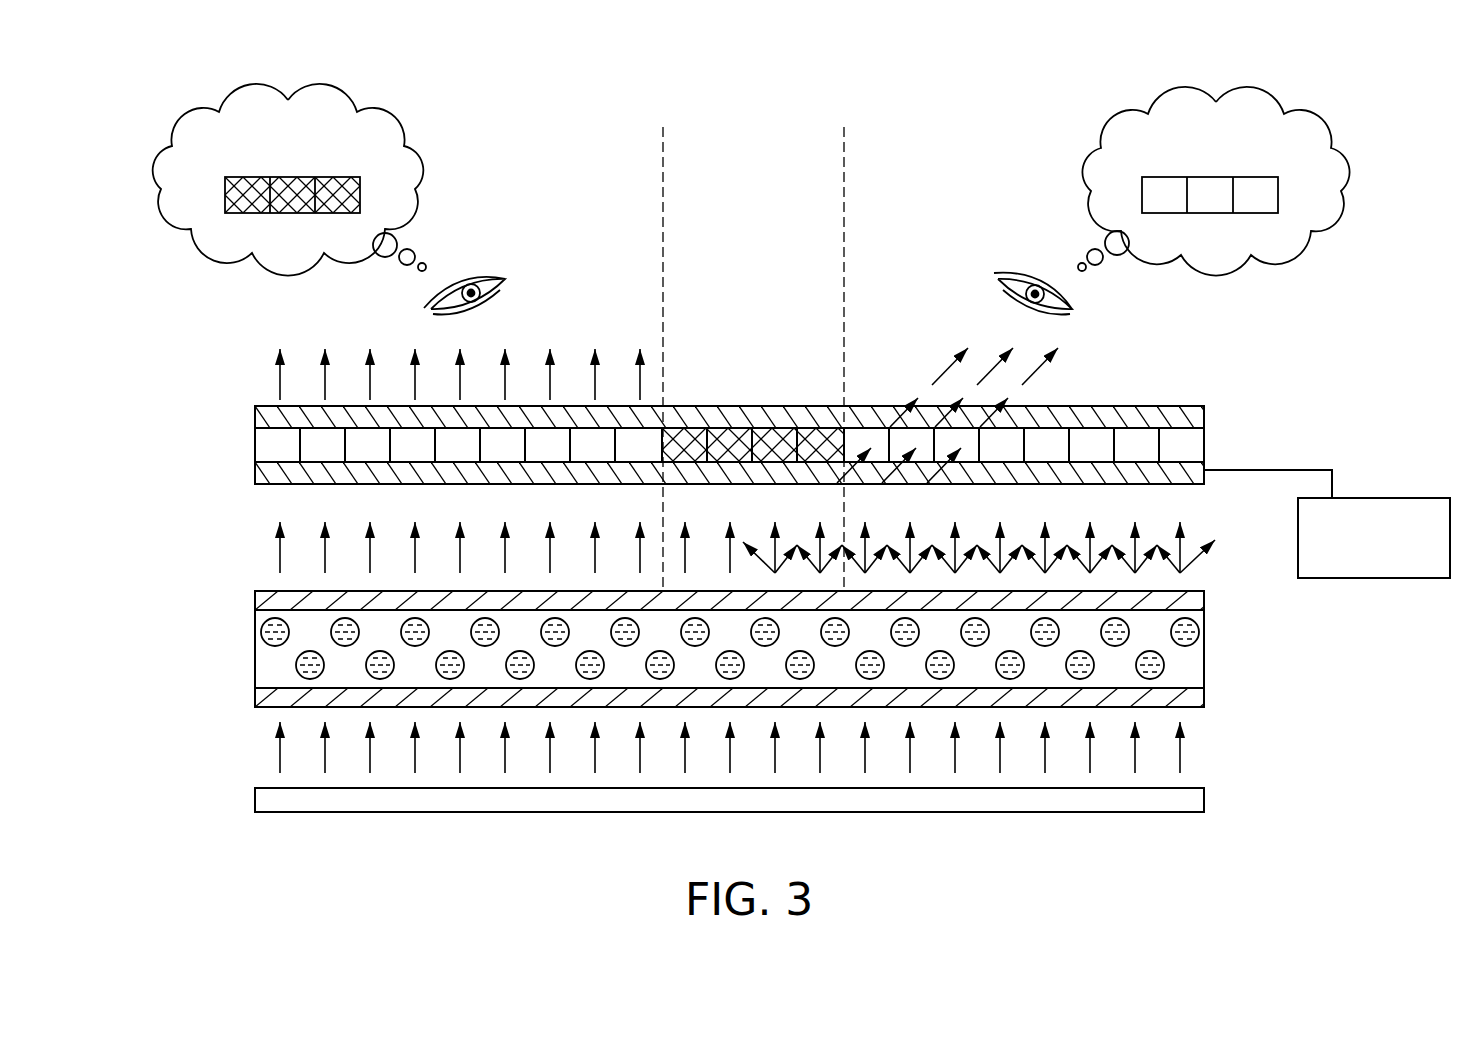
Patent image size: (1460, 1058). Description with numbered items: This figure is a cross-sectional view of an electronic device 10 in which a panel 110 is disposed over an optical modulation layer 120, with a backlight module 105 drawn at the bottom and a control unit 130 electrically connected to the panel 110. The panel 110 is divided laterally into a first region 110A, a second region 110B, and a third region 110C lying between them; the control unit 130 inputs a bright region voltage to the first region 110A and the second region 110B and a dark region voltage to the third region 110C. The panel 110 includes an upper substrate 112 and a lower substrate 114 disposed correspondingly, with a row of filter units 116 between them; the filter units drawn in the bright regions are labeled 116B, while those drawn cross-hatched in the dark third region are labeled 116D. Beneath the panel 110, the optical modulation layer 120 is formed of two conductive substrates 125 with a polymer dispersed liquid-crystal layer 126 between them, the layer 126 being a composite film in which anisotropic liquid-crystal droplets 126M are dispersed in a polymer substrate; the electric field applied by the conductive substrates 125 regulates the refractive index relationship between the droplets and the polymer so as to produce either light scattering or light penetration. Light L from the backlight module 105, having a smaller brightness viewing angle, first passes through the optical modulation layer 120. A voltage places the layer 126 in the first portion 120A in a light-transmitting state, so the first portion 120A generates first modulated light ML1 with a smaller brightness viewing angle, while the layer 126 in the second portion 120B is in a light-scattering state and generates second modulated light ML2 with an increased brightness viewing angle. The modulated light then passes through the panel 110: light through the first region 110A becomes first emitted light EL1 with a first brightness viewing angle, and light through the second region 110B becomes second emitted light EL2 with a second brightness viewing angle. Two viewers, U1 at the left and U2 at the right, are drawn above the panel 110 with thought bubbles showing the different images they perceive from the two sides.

The electronic device 10 is at (120, 62).
The backlight module 105 is at (255, 799).
The panel 110 is at (770, 380).
The first region 110A is at (663, 87).
The second region 110B is at (844, 87).
The third region 110C is at (844, 87).
The upper substrate 112 is at (1204, 410).
The lower substrate 114 is at (1204, 468).
The filter units 116 is at (846, 369).
The bright pixels 116B is at (1190, 445).
The dark pixels 116D is at (776, 445).
The optical modulation layer 120 is at (714, 648).
The first portion 120A is at (255, 826).
The second portion 120B is at (750, 826).
The conductive substrates 125 is at (1195, 600).
The polymer dispersed liquid-crystal layer 126 is at (790, 649).
The liquid-crystal droplets 126M is at (1195, 636).
The control unit 130 is at (1350, 555).
The first emitted light EL1 is at (426, 374).
The second emitted light EL2 is at (947, 414).
The first modulated light ML1 is at (443, 548).
The second modulated light ML2 is at (1005, 549).
The light L is at (746, 749).
The first user U1 is at (360, 201).
The second user U2 is at (1172, 203).